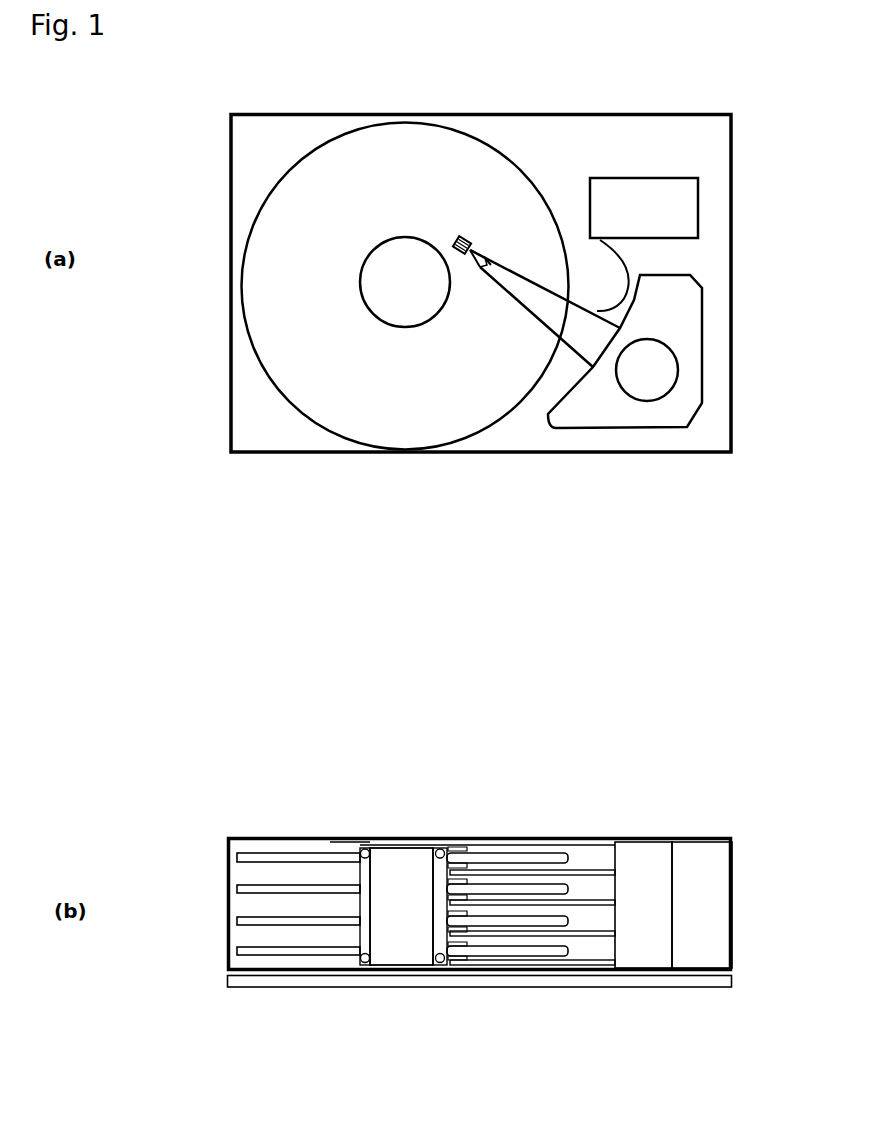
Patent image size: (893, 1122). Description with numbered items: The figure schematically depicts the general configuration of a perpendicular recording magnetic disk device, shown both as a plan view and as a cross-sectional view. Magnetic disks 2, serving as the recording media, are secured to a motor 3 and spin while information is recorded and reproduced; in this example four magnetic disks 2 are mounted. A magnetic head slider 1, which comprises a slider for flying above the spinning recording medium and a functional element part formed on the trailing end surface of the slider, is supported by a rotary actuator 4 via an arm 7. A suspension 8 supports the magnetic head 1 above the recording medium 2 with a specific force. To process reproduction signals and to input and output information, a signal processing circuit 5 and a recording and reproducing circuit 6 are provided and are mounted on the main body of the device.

The magnetic head slider 1 is at (466, 234).
The magnetic disk 2 is at (287, 173).
The motor 3 is at (401, 966).
The rotary actuator 4 is at (701, 333).
The signal processing circuit 5 is at (625, 988).
The recording and reproducing circuit 6 is at (699, 207).
The arm 7 is at (528, 317).
The suspension 8 is at (474, 261).